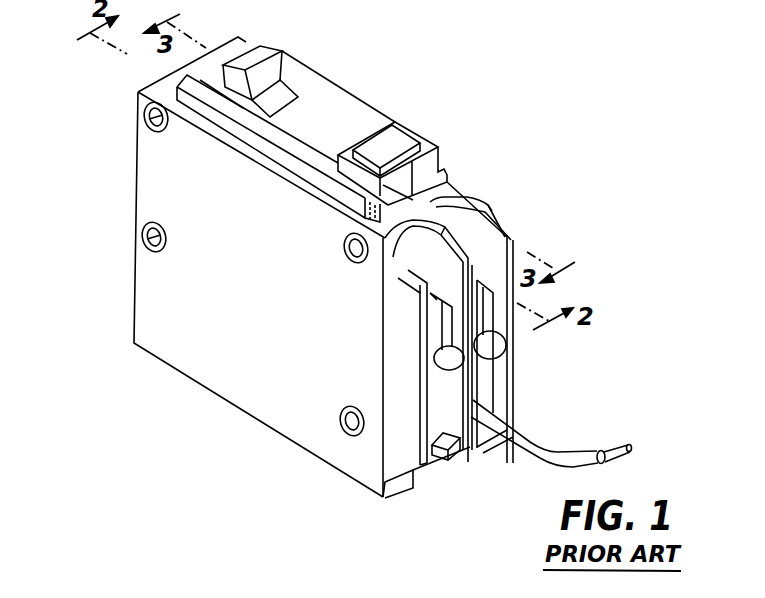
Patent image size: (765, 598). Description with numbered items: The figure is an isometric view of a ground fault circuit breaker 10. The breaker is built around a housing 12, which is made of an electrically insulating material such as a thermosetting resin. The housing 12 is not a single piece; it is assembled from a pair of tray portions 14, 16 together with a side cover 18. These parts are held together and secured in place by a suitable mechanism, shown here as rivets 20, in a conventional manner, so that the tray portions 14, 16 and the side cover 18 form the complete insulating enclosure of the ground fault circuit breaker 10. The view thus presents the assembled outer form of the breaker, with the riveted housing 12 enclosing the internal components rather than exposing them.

The ground fault circuit breaker 10 is at (379, 75).
The housing 12 is at (121, 386).
The tray portion 14 is at (352, 115).
The tray portion 16 is at (335, 456).
The side cover 18 is at (320, 150).
The rivets 20 is at (146, 126).